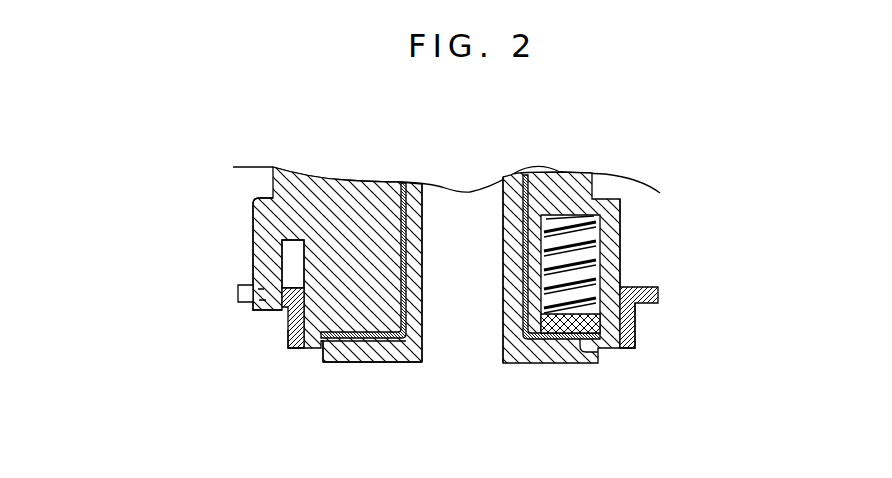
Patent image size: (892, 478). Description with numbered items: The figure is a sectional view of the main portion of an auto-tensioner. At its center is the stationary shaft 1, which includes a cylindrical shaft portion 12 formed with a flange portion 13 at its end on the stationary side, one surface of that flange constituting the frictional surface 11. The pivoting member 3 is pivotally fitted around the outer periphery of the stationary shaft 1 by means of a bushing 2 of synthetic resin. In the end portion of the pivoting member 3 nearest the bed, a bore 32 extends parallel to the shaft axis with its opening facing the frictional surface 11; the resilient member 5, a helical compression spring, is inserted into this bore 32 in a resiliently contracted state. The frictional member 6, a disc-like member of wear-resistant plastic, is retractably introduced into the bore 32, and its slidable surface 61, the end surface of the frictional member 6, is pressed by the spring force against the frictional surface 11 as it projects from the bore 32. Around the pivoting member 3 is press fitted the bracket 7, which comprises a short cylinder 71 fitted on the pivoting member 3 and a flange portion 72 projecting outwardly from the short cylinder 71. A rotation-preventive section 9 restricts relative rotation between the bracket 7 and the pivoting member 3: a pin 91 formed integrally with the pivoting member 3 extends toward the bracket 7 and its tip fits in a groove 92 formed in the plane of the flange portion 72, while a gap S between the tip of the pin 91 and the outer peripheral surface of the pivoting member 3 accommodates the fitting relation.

The stationary shaft 1 is at (428, 213).
The cylindrical shaft portion 12 is at (503, 260).
The flange portion 13 is at (358, 353).
The bushing 2 is at (527, 172).
The pivoting member 3 is at (584, 180).
The bore 32 is at (619, 258).
The resilient member 5 is at (586, 250).
The frictional member 6 is at (658, 303).
The slidable surface 61 is at (637, 333).
The bracket 7 is at (292, 349).
The short cylinder 71 is at (287, 330).
The flange portion 72 is at (596, 322).
The rotation-preventive section 9 is at (194, 244).
The pin 91 is at (252, 262).
The groove 92 is at (237, 287).
The frictional surface 11 is at (579, 341).
The gap S is at (298, 267).